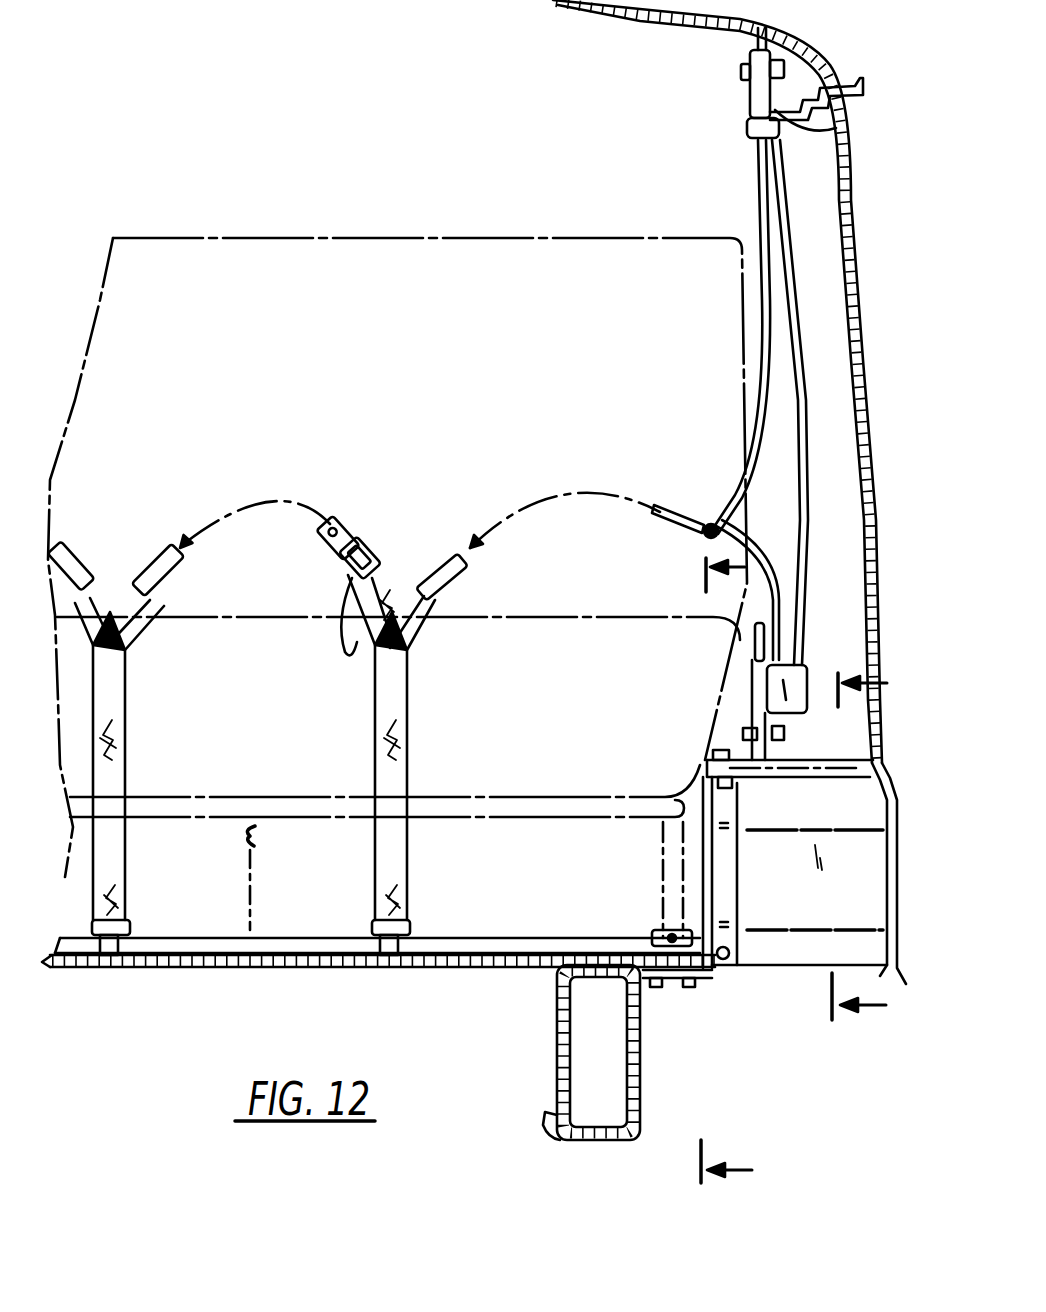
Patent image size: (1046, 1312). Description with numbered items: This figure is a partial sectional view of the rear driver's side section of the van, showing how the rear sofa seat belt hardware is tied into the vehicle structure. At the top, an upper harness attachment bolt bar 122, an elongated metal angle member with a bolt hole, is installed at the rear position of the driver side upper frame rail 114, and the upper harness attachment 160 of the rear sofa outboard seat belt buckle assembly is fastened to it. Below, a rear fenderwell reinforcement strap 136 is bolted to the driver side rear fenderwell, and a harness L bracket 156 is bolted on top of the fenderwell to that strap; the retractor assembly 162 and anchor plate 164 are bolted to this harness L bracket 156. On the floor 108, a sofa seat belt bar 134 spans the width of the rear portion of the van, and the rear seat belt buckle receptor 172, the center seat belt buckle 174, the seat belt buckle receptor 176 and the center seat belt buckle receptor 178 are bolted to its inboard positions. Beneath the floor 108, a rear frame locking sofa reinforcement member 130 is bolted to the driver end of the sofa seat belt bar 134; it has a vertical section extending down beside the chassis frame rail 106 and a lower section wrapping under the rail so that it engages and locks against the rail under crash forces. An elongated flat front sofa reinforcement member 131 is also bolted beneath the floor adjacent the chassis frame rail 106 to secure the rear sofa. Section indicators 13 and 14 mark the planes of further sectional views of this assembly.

The chassis frame rail 106 is at (557, 1057).
The floor 108 is at (290, 967).
The driver side upper frame rail 114 is at (838, 130).
The upper harness attachment bolt bar 122 is at (797, 93).
The rear frame locking sofa reinforcement member 130 is at (640, 1068).
The front sofa reinforcement member 131 is at (675, 975).
The sofa seat belt bar 134 is at (510, 918).
The rear fenderwell reinforcement strap 136 is at (720, 860).
The harness L bracket 156 is at (770, 757).
The upper harness attachment 160 is at (748, 100).
The retractor assembly 162 is at (803, 665).
The anchor plate 164 is at (750, 694).
The rear seat belt buckle receptor 172 is at (463, 572).
The center seat belt buckle 174 is at (372, 498).
The seat belt buckle receptor 176 is at (78, 545).
The center seat belt buckle receptor 178 is at (168, 547).
The section line 13 is at (704, 883).
The section line 14 is at (858, 849).